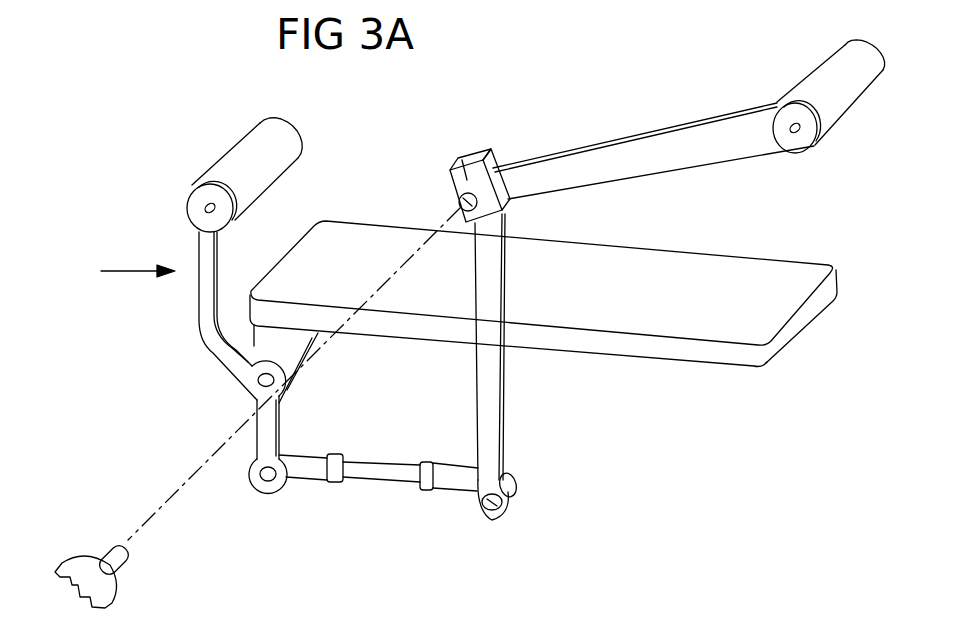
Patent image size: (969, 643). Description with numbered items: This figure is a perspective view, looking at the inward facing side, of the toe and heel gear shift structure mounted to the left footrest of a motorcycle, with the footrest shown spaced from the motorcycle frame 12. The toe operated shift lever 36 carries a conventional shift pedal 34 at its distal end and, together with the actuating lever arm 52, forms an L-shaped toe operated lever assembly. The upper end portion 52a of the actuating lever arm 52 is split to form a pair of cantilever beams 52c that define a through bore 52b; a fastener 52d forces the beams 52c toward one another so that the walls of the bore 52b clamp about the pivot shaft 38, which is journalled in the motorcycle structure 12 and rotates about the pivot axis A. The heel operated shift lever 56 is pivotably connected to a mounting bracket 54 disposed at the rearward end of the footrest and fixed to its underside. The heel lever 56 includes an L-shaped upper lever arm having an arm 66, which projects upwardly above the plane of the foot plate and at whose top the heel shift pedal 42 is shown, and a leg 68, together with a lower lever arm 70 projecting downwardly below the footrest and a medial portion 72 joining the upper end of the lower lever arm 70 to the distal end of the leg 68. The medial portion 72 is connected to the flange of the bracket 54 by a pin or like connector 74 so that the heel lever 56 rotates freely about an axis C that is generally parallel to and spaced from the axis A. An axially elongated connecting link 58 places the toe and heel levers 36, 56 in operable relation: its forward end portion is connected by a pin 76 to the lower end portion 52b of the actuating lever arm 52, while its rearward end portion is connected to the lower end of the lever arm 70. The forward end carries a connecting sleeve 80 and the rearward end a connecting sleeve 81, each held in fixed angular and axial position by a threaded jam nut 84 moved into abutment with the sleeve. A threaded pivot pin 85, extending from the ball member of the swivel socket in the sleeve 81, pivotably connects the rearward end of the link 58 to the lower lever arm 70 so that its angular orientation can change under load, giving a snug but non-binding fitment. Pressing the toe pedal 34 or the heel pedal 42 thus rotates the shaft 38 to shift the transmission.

The motorcycle frame 12 is at (100, 593).
The shift pedal 34 is at (826, 93).
The toe operated shift lever 36 is at (672, 150).
The pivot shaft 38 is at (115, 563).
The shift pedal 42 is at (232, 166).
The actuating lever arm 52 is at (492, 390).
The upper end portion 52a is at (492, 236).
The lower end portion 52b is at (458, 201).
The cantilever beams 52c is at (453, 169).
The fastener 52d is at (495, 166).
The mounting bracket 54 is at (200, 330).
The heel operated shift lever 56 is at (101, 271).
The connecting link 58 is at (385, 475).
The arm 66 is at (207, 252).
The leg 68 is at (208, 359).
The lower lever arm 70 is at (270, 438).
The medial portion 72 is at (262, 408).
The connector 74 is at (258, 381).
The pin 76 is at (494, 505).
The connecting sleeve 80 is at (448, 492).
The connecting sleeve 81 is at (308, 467).
The jam nut 84 is at (330, 485).
The pivot pin 85 is at (268, 475).
The pivot axis A is at (167, 498).
The pivot axis C is at (216, 457).